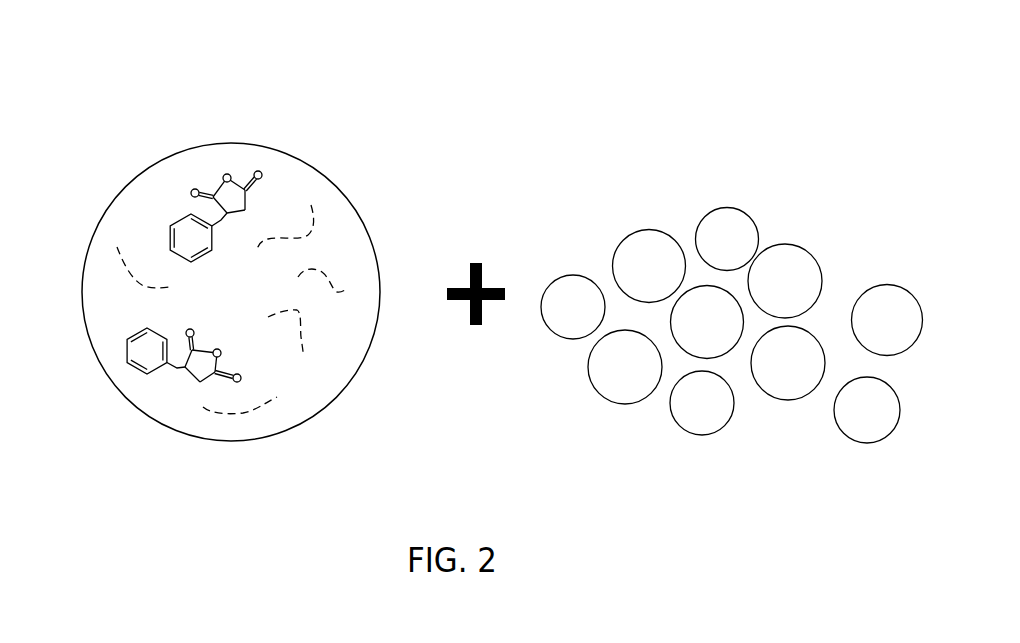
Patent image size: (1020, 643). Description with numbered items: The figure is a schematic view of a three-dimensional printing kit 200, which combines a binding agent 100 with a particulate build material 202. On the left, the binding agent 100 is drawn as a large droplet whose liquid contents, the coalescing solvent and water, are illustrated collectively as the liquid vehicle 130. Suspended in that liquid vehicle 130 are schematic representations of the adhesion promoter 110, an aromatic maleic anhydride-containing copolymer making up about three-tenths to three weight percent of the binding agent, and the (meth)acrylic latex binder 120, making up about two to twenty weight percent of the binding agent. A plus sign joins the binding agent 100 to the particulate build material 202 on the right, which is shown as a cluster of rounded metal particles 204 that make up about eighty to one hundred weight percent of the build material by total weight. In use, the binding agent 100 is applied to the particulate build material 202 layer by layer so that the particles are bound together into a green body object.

The three-dimensional printing kit 200 is at (362, 53).
The binding agent 100 is at (177, 125).
The adhesion promoter 110 is at (180, 218).
The (meth)acrylic latex binder 120 is at (307, 197).
The liquid vehicle 130 is at (323, 382).
The particulate build material 202 is at (650, 190).
The metal particles 204 is at (803, 272).